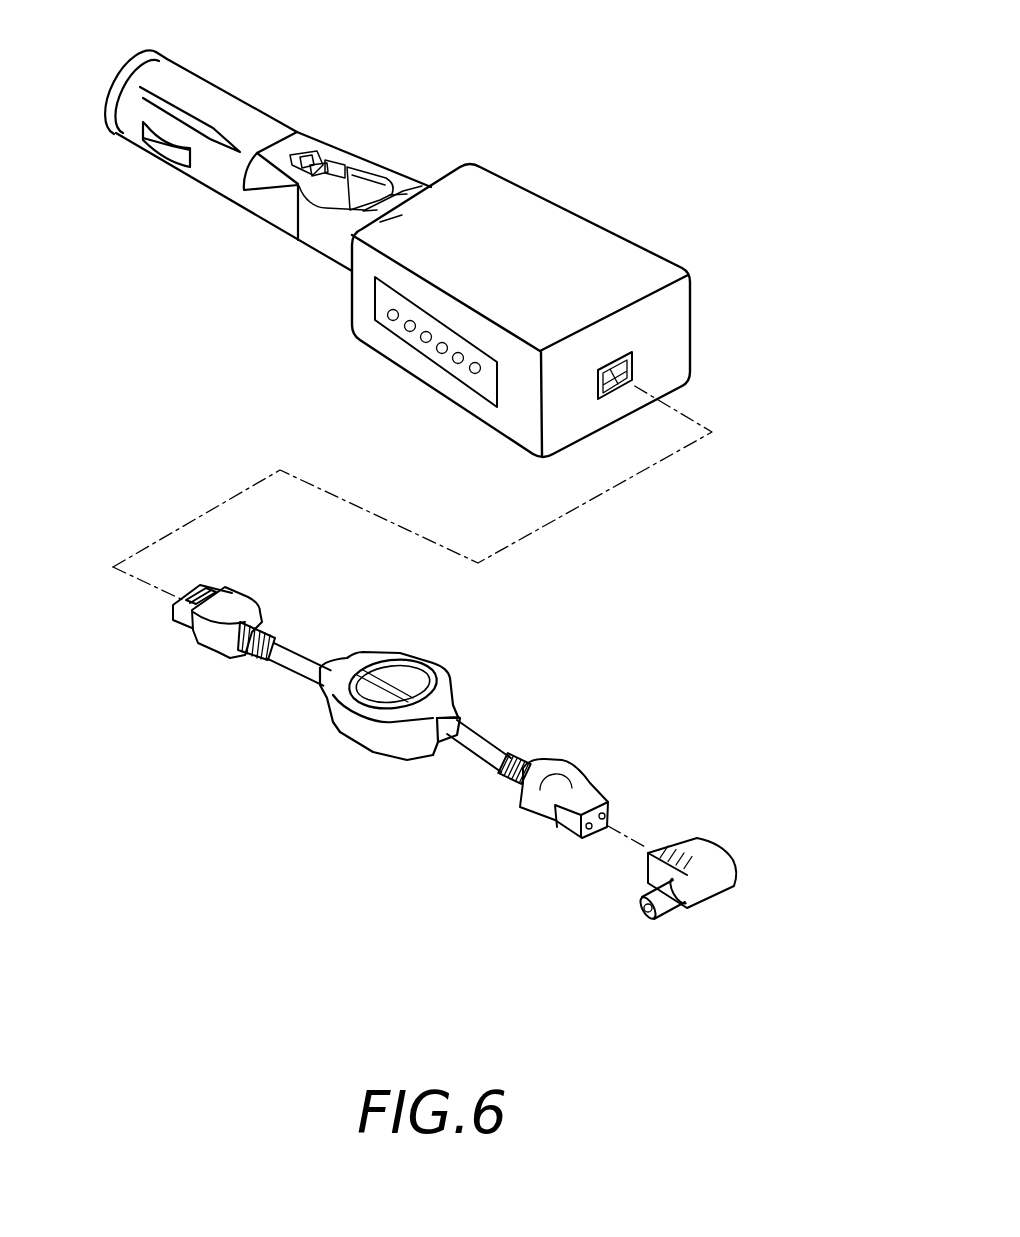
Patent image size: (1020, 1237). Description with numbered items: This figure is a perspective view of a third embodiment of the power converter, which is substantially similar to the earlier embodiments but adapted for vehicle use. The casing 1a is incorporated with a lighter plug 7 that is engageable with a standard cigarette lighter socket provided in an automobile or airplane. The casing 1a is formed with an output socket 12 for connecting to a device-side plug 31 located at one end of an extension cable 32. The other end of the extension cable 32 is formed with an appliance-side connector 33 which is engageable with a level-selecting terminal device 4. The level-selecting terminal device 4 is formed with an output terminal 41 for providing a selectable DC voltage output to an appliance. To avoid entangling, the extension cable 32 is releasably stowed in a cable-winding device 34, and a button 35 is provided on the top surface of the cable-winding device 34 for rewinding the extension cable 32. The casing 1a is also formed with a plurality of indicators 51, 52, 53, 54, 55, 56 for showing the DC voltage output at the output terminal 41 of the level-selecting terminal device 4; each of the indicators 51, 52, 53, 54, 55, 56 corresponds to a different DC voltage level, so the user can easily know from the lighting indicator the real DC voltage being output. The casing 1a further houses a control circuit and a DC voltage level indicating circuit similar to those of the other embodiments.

The lighter plug 7 is at (260, 125).
The casing 1a is at (540, 232).
The output socket 12 is at (630, 373).
The indicator 51 is at (387, 315).
The indicator 52 is at (404, 327).
The indicator 53 is at (420, 338).
The indicator 54 is at (438, 354).
The indicator 55 is at (458, 365).
The indicator 56 is at (475, 375).
The device-side plug 31 is at (212, 632).
The extension cable 32 is at (298, 660).
The appliance-side connector 33 is at (535, 802).
The cable-winding device 34 is at (353, 738).
The button 35 is at (413, 692).
The level-selecting terminal device 4 is at (705, 862).
The output terminal 41 is at (670, 903).